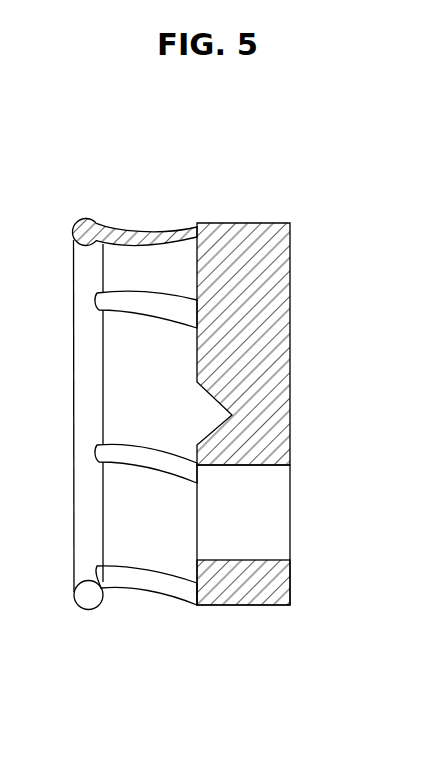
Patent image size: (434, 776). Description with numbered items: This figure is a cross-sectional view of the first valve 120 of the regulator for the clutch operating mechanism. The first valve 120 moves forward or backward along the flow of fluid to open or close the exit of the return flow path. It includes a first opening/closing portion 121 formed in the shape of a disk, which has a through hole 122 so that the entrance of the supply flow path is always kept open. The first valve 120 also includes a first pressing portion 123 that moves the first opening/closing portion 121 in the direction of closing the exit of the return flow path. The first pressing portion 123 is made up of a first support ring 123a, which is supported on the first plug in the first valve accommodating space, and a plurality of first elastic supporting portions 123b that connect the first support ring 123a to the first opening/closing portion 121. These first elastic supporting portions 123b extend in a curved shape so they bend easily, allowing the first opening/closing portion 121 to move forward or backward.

The first valve 120 is at (197, 188).
The first opening/closing portion 121 is at (260, 279).
The through hole 122 is at (265, 560).
The first pressing portion 123 is at (165, 705).
The first support ring 123a is at (89, 606).
The first elastic supporting portions 123b is at (150, 577).